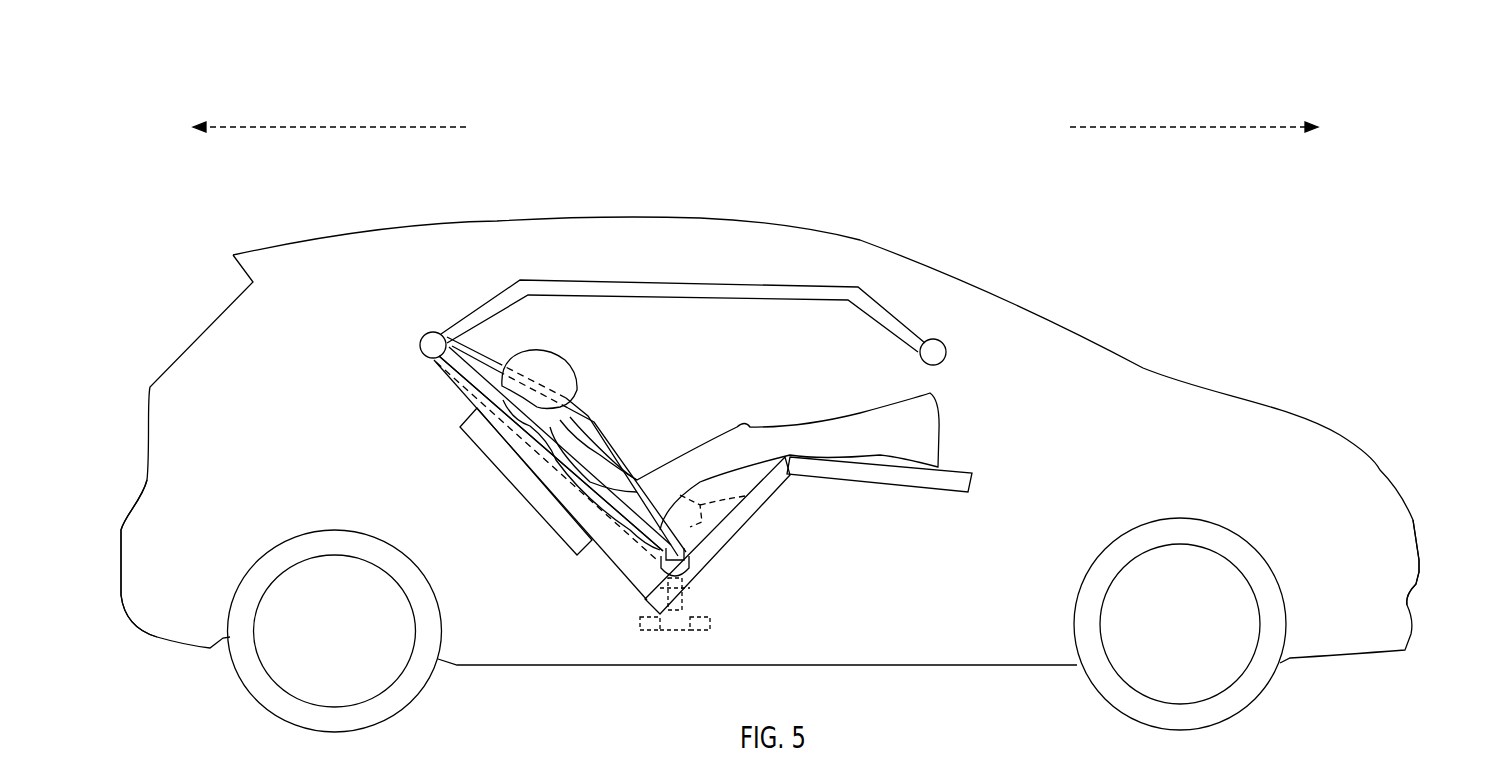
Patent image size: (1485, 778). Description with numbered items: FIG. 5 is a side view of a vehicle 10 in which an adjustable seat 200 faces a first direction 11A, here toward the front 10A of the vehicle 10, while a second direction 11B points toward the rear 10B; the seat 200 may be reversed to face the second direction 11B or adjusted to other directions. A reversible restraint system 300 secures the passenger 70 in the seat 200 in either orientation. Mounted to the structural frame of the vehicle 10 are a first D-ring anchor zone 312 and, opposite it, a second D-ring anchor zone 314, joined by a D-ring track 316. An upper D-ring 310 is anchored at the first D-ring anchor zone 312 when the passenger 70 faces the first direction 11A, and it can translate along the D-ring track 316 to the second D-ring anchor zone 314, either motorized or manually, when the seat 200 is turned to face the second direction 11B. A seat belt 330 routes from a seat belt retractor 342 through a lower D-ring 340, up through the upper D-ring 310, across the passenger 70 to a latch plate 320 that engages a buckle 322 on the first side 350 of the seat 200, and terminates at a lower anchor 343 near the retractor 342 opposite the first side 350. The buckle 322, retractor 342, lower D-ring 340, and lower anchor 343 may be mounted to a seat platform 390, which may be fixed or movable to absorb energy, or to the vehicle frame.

The vehicle 10 is at (760, 218).
The front of the vehicle 10A is at (1419, 572).
The rear of the vehicle 10B is at (122, 531).
The first direction 11A is at (1228, 127).
The second direction 11B is at (372, 127).
The passenger 70 is at (520, 362).
The adjustable seat 200 is at (425, 322).
The reversible restraint system 300 is at (670, 238).
The upper D-ring 310 is at (432, 358).
The first D-ring anchor zone 312 is at (420, 348).
The second D-ring anchor zone 314 is at (947, 352).
The D-ring track 316 is at (695, 282).
The latch plate 320 is at (700, 545).
The buckle 322 is at (690, 556).
The seat belt 330 is at (600, 420).
The lower D-ring 340 is at (690, 586).
The seat belt retractor 342 is at (690, 608).
The lower anchor 343 is at (718, 495).
The first side 350 is at (648, 553).
The seat platform 390 is at (710, 624).